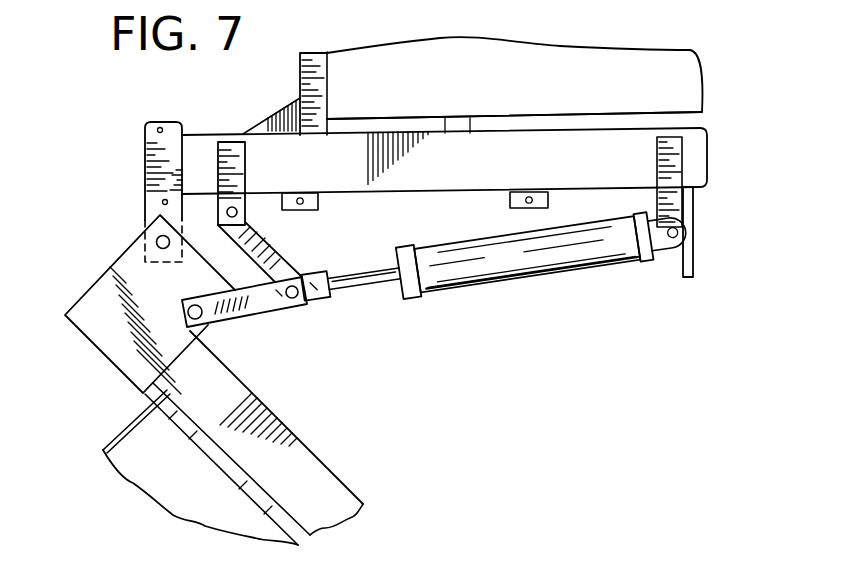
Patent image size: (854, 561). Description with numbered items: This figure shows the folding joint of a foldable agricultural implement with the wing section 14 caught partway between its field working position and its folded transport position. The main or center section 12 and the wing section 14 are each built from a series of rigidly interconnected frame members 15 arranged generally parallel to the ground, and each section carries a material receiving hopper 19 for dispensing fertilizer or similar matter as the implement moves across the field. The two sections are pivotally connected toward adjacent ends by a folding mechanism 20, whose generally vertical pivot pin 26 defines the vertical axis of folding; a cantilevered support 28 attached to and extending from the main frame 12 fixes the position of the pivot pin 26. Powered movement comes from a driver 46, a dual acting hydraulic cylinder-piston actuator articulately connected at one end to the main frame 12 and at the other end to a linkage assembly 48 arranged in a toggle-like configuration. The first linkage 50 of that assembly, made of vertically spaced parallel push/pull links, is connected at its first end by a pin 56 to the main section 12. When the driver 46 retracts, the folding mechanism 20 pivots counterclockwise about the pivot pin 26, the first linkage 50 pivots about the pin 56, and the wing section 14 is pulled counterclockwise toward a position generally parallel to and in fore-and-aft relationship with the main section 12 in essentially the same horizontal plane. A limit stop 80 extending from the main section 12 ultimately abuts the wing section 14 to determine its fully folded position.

The main section 12 is at (624, 126).
The wing section 14 is at (324, 447).
The frame members 15 is at (557, 148).
The material receiving hopper 19 is at (501, 81).
The folding mechanism 20 is at (100, 361).
The pivot pin 26 is at (163, 236).
The cantilevered support 28 is at (158, 168).
The driver 46 is at (502, 282).
The linkage assembly 48 is at (284, 315).
The first linkage 50 is at (327, 250).
The pin 56 is at (238, 210).
The limit stop 80 is at (696, 248).